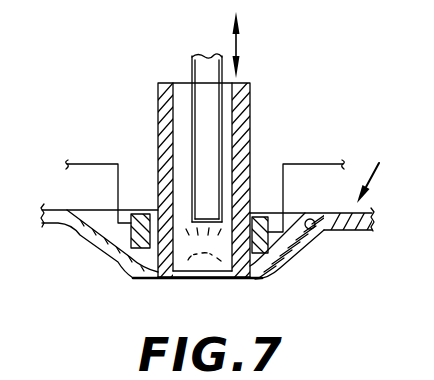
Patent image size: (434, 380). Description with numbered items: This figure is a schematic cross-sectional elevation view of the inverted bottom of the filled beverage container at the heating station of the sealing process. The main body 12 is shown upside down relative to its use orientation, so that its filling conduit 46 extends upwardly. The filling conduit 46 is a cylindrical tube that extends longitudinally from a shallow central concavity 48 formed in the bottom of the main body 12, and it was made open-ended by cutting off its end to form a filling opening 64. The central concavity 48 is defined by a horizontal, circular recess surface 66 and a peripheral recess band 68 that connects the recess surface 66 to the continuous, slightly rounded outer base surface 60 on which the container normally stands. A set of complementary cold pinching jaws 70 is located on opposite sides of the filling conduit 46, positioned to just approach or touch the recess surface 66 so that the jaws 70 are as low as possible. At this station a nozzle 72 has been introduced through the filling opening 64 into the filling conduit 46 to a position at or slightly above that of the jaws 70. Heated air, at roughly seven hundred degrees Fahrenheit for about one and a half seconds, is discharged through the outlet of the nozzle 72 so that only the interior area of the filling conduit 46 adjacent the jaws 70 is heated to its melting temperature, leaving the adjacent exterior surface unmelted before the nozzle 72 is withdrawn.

The main body 12 is at (336, 192).
The filling conduit 46 is at (252, 108).
The central concavity 48 is at (82, 244).
The outer base surface 60 is at (43, 208).
The filling opening 64 is at (187, 82).
The recess surface 66 is at (250, 282).
The recess band 68 is at (326, 230).
The cold pinching jaws 70 is at (115, 258).
The nozzle 72 is at (193, 120).